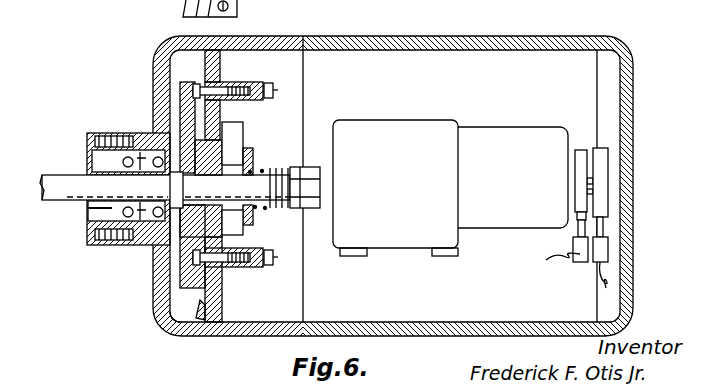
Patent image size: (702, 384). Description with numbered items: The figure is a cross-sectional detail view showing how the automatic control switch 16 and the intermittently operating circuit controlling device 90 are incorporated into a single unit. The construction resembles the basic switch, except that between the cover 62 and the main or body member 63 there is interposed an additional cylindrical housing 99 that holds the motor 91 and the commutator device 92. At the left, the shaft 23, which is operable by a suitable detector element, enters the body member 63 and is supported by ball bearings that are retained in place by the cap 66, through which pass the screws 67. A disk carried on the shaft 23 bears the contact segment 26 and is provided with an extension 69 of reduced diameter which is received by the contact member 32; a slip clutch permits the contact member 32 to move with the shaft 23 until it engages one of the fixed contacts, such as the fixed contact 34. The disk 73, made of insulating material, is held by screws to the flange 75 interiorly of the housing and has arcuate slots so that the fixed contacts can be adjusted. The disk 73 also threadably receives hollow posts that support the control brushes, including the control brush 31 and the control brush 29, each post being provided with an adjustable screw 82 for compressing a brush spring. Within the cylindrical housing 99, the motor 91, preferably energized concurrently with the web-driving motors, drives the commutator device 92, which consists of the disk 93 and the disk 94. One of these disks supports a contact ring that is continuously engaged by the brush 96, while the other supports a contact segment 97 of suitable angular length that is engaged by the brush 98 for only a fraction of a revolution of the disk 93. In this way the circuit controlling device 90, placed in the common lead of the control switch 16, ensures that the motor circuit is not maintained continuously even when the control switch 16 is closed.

The automatic control switch 16 is at (120, 106).
The shaft 23 is at (56, 196).
The contact segment 26 is at (199, 290).
The control brush 29 is at (224, 259).
The control brush 31 is at (228, 84).
The contact member 32 is at (232, 228).
The fixed contact 34 is at (244, 126).
The cover 62 is at (633, 97).
The main or body member 63 is at (278, 37).
The cap 66 is at (110, 246).
The screws 67 is at (93, 233).
The extension 69 is at (250, 215).
The disk 73 is at (222, 316).
The flange 75 is at (205, 352).
The adjustable screw 82 is at (278, 259).
The intermittently operating circuit controlling device 90 is at (498, 101).
The motor 91 is at (415, 128).
The commutator device 92 is at (574, 134).
The disk 93 is at (590, 212).
The disk 94 is at (603, 174).
The brush 96 is at (608, 225).
The contact segment 97 is at (579, 165).
The brush 98 is at (580, 236).
The cylindrical housing 99 is at (455, 36).